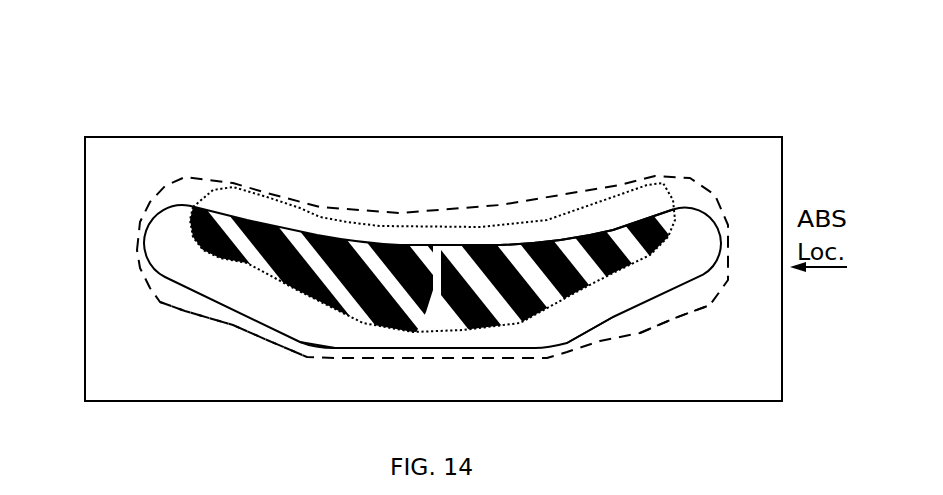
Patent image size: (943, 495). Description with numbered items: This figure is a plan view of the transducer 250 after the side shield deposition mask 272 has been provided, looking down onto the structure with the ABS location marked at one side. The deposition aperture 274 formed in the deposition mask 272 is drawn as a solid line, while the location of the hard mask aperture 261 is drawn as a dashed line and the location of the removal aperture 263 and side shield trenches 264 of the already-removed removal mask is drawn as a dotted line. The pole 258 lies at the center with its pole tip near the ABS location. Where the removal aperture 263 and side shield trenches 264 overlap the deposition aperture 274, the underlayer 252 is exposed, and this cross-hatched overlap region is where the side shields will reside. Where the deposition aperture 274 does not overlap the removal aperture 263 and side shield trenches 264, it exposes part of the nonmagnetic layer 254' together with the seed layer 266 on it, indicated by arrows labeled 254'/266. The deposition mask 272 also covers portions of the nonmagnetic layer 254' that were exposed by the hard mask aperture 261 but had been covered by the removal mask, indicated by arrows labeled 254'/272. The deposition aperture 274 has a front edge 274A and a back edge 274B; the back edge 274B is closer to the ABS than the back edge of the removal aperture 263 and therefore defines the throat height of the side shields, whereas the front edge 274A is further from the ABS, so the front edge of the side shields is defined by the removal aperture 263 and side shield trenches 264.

The transducer 250 is at (453, 56).
The side shield deposition mask 272 is at (84, 187).
The hard mask aperture 261 is at (175, 183).
The underlayer 252 is at (490, 253).
The seed layer 266 is at (213, 212).
The removal aperture 263 is at (432, 219).
The side shield trenches 264 is at (515, 228).
The deposition aperture 274 is at (192, 287).
The front edge 274A is at (408, 366).
The back edge 274B is at (553, 225).
The pole 258 is at (458, 271).
The nonmagnetic layer 254' is at (449, 370).